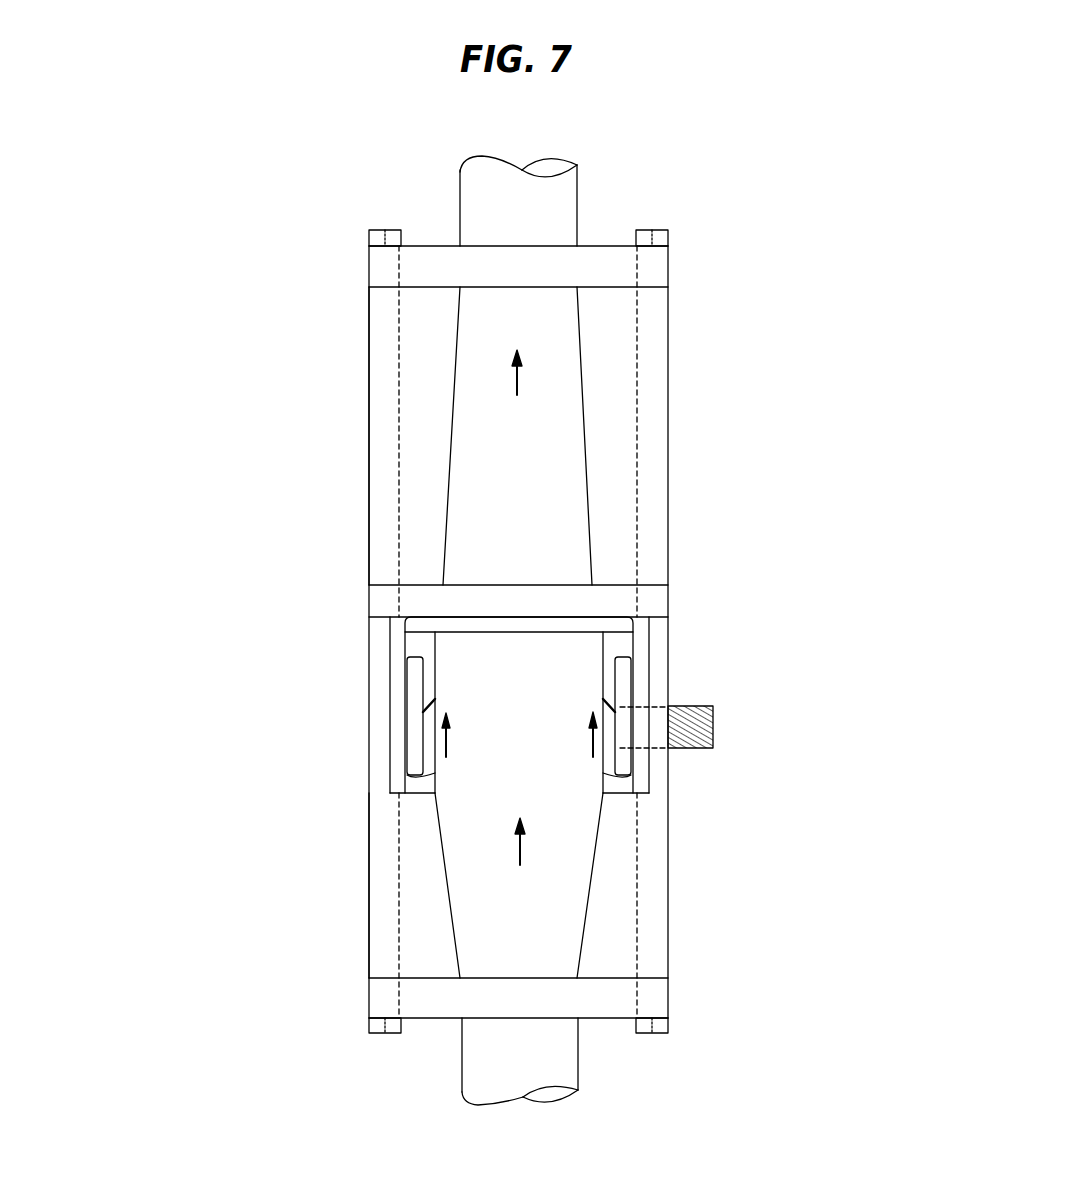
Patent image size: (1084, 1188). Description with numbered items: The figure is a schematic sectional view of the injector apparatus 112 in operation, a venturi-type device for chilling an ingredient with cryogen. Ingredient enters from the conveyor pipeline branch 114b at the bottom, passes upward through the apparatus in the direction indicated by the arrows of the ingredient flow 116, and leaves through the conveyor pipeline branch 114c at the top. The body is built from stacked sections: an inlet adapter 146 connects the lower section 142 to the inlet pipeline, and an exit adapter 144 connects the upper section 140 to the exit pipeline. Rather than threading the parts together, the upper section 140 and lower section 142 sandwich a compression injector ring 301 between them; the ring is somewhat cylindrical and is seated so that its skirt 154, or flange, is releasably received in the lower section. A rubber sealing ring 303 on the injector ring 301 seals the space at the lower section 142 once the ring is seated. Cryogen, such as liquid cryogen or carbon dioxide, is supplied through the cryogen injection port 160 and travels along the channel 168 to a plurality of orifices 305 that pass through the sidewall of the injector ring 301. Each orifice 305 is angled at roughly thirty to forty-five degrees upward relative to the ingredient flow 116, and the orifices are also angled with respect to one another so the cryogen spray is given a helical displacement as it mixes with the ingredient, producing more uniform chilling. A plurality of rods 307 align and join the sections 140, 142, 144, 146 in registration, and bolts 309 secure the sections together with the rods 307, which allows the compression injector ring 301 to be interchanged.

The injector apparatus 112 is at (720, 388).
The conveyor pipeline branch 114b is at (579, 1065).
The conveyor pipeline branch 114c is at (578, 207).
The ingredient flow 116 is at (516, 376).
The upper section 140 is at (369, 506).
The lower section 142 is at (285, 696).
The exit adapter 144 is at (300, 385).
The inlet adapter 146 is at (369, 940).
The skirt 154 is at (420, 773).
The cryogen injection port 160 is at (738, 729).
The channel 168 is at (413, 687).
The compression injector ring 301 is at (618, 670).
The rubber sealing ring 303 is at (405, 633).
The orifices 305 is at (422, 708).
The rods 307 is at (370, 335).
The bolts 309 is at (668, 240).